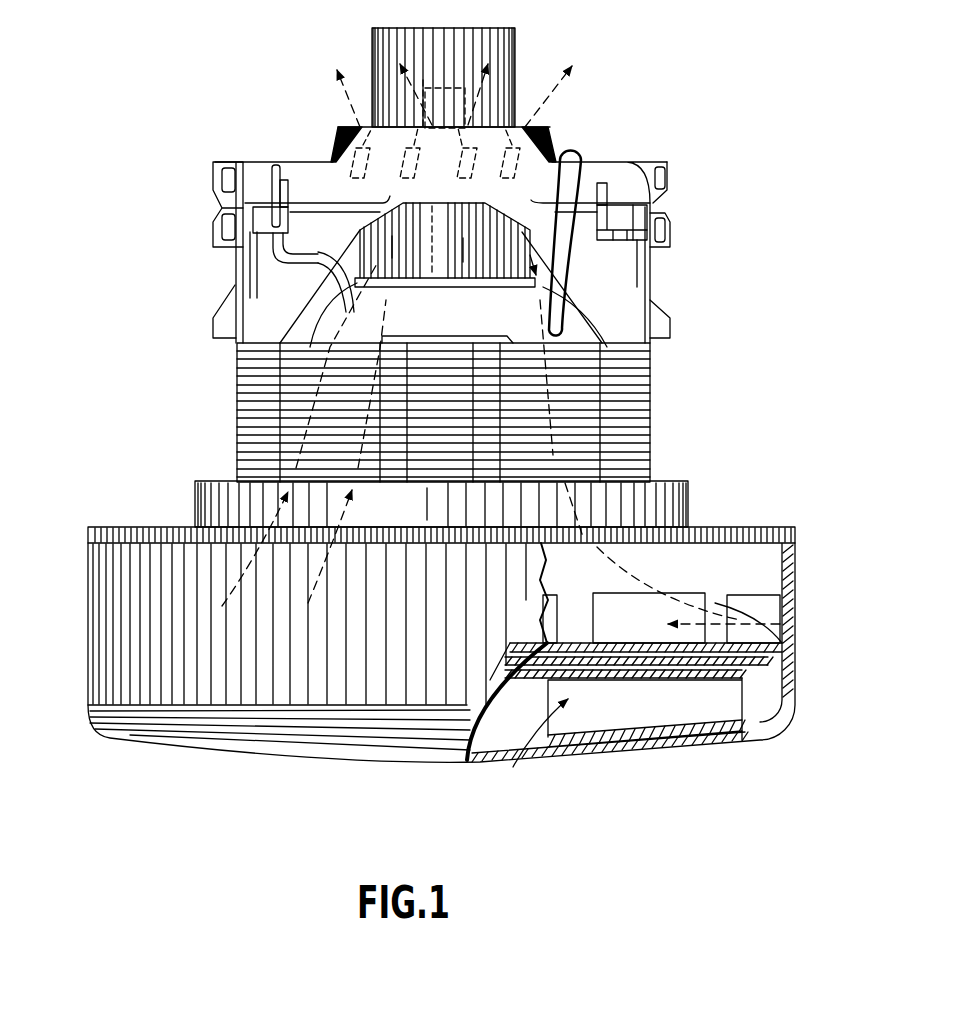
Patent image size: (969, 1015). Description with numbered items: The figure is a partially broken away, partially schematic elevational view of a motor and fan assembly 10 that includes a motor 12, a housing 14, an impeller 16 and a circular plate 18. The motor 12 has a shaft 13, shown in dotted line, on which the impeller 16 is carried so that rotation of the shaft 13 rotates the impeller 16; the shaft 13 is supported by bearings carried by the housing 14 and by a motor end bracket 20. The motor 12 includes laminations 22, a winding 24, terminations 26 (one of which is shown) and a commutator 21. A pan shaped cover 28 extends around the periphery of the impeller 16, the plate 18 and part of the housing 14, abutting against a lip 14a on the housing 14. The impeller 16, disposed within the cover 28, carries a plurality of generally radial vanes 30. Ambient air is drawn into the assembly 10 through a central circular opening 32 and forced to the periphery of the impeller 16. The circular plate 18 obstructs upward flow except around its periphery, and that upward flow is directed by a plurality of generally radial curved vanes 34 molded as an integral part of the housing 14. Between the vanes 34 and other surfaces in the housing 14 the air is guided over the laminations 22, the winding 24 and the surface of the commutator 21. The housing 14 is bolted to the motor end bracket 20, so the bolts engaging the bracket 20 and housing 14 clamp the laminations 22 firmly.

The motor and fan assembly 10 is at (746, 304).
The motor 12 is at (672, 436).
The shaft 13 is at (443, 78).
The housing 14 is at (762, 527).
The lip 14a is at (800, 541).
The impeller 16 is at (743, 703).
The circular plate 18 is at (780, 660).
The motor end bracket 20 is at (628, 162).
The commutator 21 is at (362, 250).
The laminations 22 is at (233, 428).
The winding 24 is at (300, 307).
The terminations 26 is at (253, 174).
The pan shaped cover 28 is at (90, 662).
The radial vanes 30 is at (643, 708).
The central circular opening 32 is at (542, 760).
The curved vanes 34 is at (795, 606).